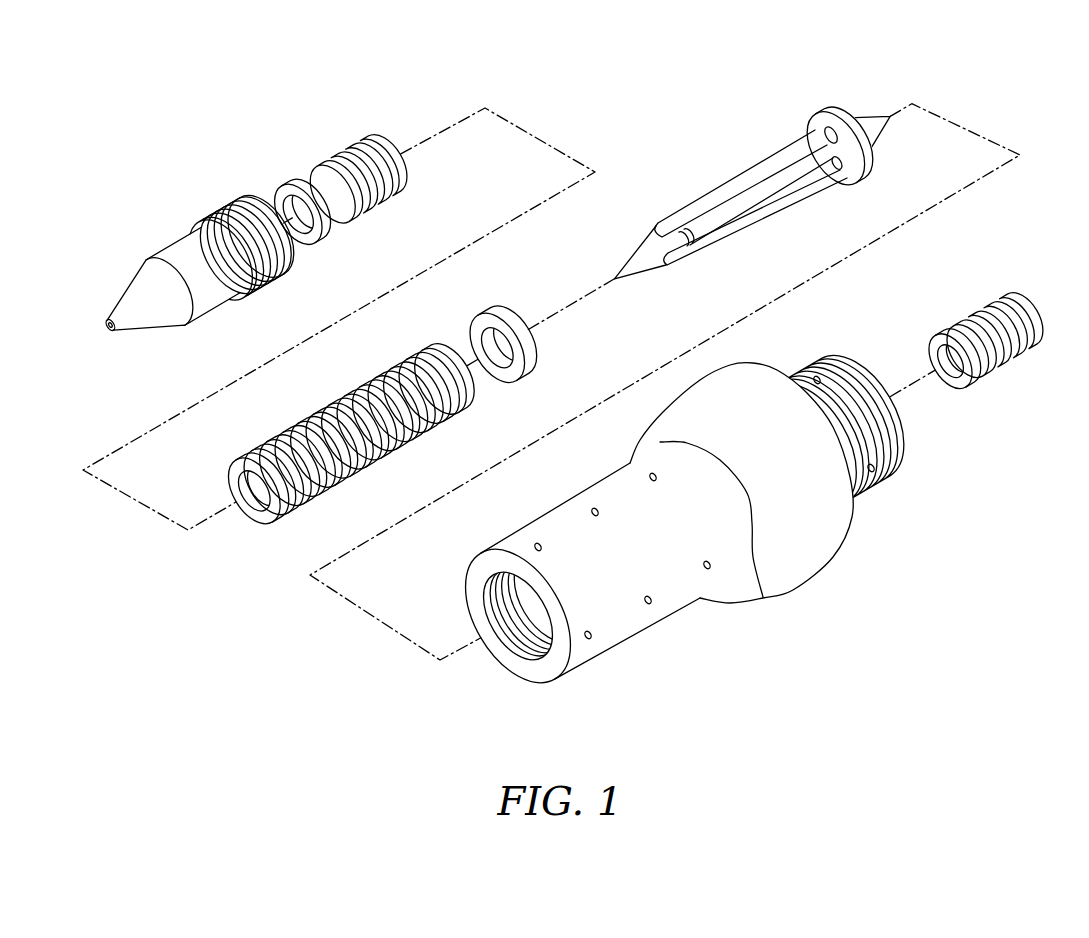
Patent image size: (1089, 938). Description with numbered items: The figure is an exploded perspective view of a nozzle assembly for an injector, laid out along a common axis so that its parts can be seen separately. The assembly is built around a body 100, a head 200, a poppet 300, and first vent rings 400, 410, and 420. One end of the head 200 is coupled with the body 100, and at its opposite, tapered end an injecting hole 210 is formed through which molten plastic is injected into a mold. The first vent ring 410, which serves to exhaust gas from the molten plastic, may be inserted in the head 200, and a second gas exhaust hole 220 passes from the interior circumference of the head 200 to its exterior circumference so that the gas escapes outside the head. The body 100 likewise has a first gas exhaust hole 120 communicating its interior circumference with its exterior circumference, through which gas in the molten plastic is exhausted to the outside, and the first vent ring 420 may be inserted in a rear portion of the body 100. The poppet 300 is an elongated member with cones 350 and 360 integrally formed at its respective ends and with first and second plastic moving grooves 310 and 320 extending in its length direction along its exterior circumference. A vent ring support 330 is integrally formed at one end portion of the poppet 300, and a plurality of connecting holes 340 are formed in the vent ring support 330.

The body 100 is at (674, 527).
The first gas exhaust hole 120 is at (652, 603).
The head 200 is at (189, 264).
The injecting hole 210 is at (106, 332).
The second gas exhaust hole 220 is at (237, 212).
The poppet 300 is at (779, 183).
The first plastic moving groove 310 is at (685, 217).
The second plastic moving groove 320 is at (727, 210).
The vent ring support 330 is at (817, 112).
The connecting holes 340 is at (835, 131).
The cone 350 is at (645, 270).
The cone 360 is at (883, 134).
The first vent ring 400 is at (277, 540).
The first vent ring 410 is at (293, 148).
The first vent ring 420 is at (1008, 388).